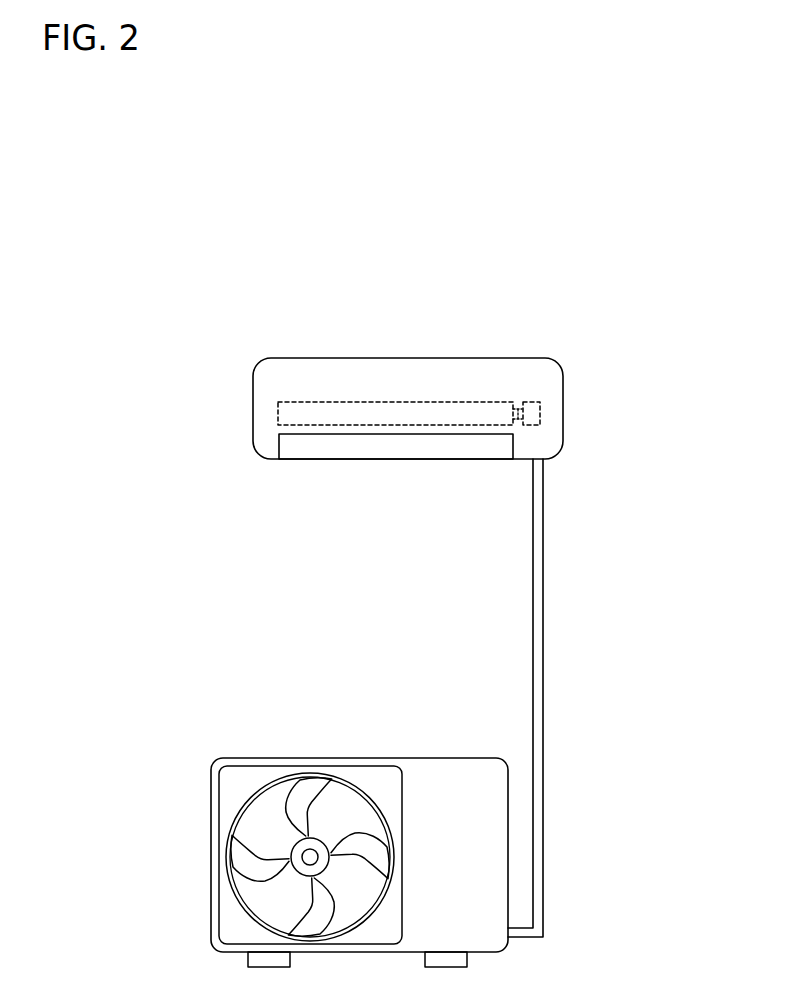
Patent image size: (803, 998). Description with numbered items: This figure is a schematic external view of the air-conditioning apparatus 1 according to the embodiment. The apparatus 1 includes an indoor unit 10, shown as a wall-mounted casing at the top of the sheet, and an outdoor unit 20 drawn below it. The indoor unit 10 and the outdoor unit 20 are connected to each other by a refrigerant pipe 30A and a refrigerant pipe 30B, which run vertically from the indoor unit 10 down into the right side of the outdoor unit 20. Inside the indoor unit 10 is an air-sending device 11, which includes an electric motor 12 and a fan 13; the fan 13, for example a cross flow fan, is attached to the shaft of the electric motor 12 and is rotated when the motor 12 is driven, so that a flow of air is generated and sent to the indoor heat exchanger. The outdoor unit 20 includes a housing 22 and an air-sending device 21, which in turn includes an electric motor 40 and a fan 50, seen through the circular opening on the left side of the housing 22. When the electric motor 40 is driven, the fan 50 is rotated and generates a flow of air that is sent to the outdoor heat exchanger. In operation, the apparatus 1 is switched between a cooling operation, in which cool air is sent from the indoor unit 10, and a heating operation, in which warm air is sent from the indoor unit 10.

The air-conditioning apparatus 1 is at (700, 266).
The indoor unit 10 is at (314, 358).
The air-sending device 11 is at (439, 363).
The electric motor 12 is at (532, 401).
The fan 13 is at (400, 401).
The outdoor unit 20 is at (315, 758).
The air-sending device 21 is at (231, 857).
The housing 22 is at (447, 783).
The refrigerant pipe 30A is at (544, 682).
The refrigerant pipe 30B is at (525, 698).
The electric motor 40 is at (290, 838).
The fan 50 is at (262, 899).